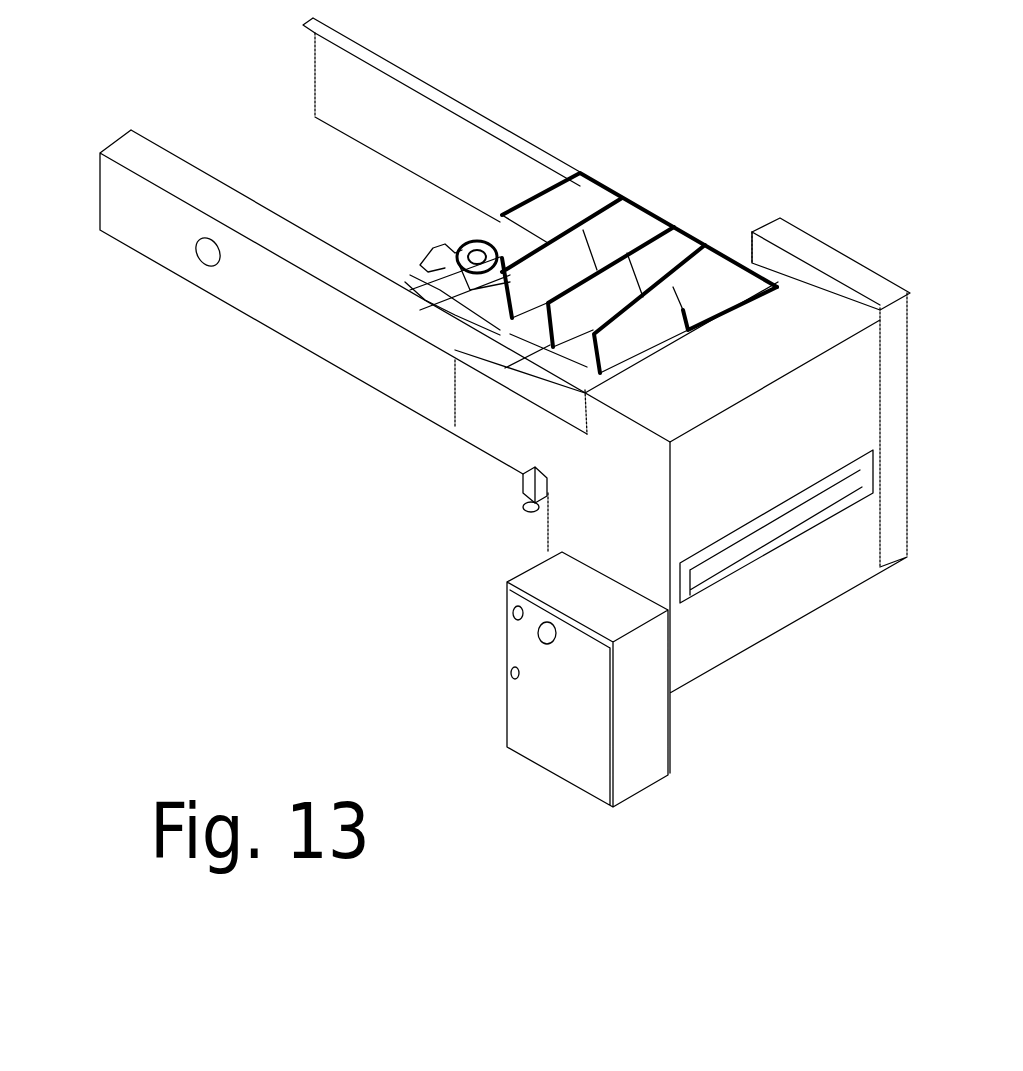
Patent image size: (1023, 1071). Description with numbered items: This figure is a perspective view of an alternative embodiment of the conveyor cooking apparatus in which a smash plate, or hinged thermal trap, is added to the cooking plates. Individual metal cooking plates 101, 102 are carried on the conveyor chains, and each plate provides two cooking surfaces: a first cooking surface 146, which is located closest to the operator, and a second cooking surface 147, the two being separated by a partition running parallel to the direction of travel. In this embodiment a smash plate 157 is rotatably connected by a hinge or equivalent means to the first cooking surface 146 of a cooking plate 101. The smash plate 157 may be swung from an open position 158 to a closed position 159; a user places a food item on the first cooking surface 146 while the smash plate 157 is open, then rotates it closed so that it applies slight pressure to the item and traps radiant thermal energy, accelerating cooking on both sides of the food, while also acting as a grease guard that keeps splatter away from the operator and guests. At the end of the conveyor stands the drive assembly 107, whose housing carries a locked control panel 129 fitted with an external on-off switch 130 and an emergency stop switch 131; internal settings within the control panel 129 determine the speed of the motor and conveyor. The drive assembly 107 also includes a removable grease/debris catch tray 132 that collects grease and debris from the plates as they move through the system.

The cooking plate 101 is at (592, 157).
The cooking plate 102 is at (645, 179).
The second cooking surface 147 is at (642, 216).
The smash plate 157 is at (572, 266).
The closed position 159 is at (435, 287).
The first cooking surface 146 is at (473, 314).
The open position 158 is at (498, 378).
The external on-off switch 130 is at (493, 615).
The emergency stop switch 131 is at (549, 673).
The control panel 129 is at (650, 712).
The grease/debris catch tray 132 is at (784, 536).
The drive assembly 107 is at (858, 590).